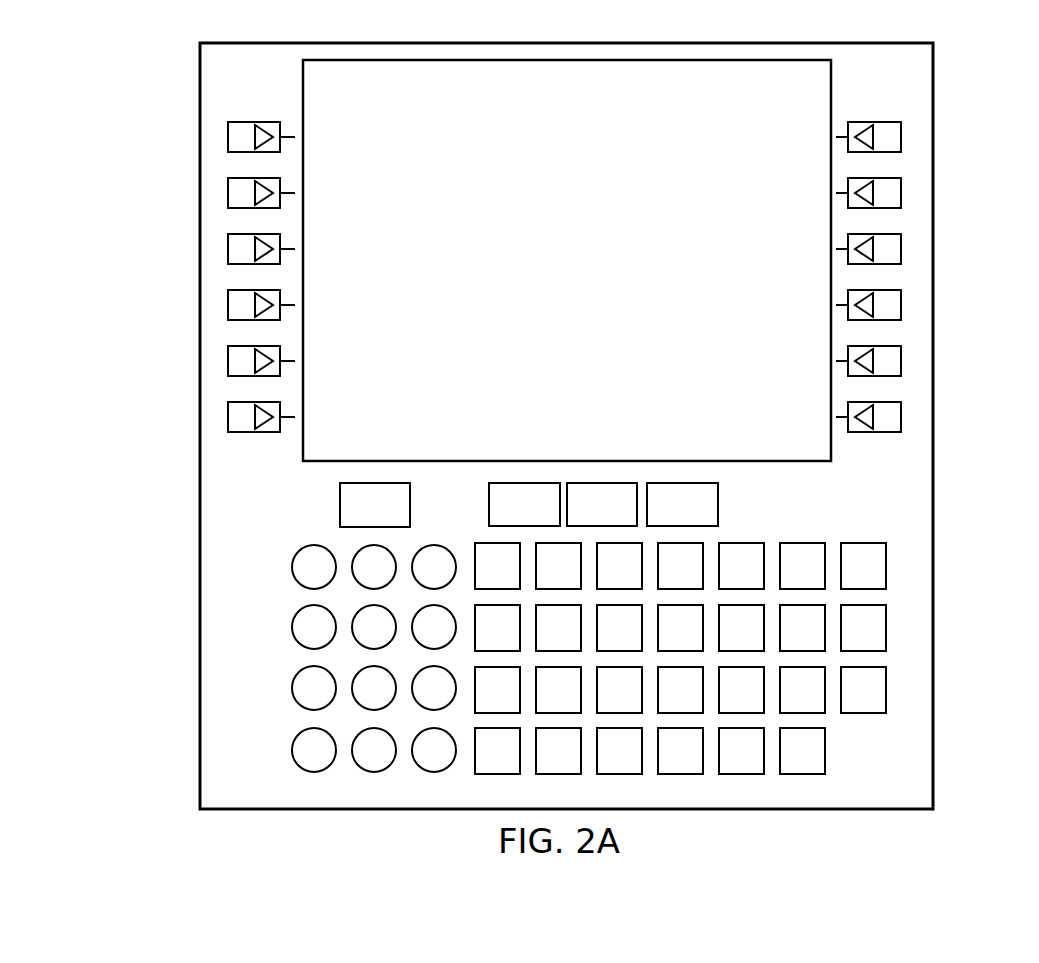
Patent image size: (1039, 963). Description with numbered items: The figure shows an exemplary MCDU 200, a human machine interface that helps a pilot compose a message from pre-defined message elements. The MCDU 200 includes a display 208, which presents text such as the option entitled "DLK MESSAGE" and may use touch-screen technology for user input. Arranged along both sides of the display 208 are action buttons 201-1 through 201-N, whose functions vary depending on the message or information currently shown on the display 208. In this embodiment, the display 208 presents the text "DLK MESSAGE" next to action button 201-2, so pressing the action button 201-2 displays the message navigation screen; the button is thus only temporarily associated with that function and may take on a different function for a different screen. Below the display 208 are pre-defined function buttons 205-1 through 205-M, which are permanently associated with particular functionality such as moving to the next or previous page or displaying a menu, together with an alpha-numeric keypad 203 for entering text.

The MCDU 200 is at (536, 408).
The action button 201-N is at (228, 137).
The action button 201-1 is at (228, 417).
The action button 201-2 is at (901, 417).
The display 208 is at (784, 119).
The pre-defined function button 205-1 is at (340, 505).
The pre-defined function button 205-M is at (718, 505).
The alpha-numeric keypad 203 is at (944, 550).